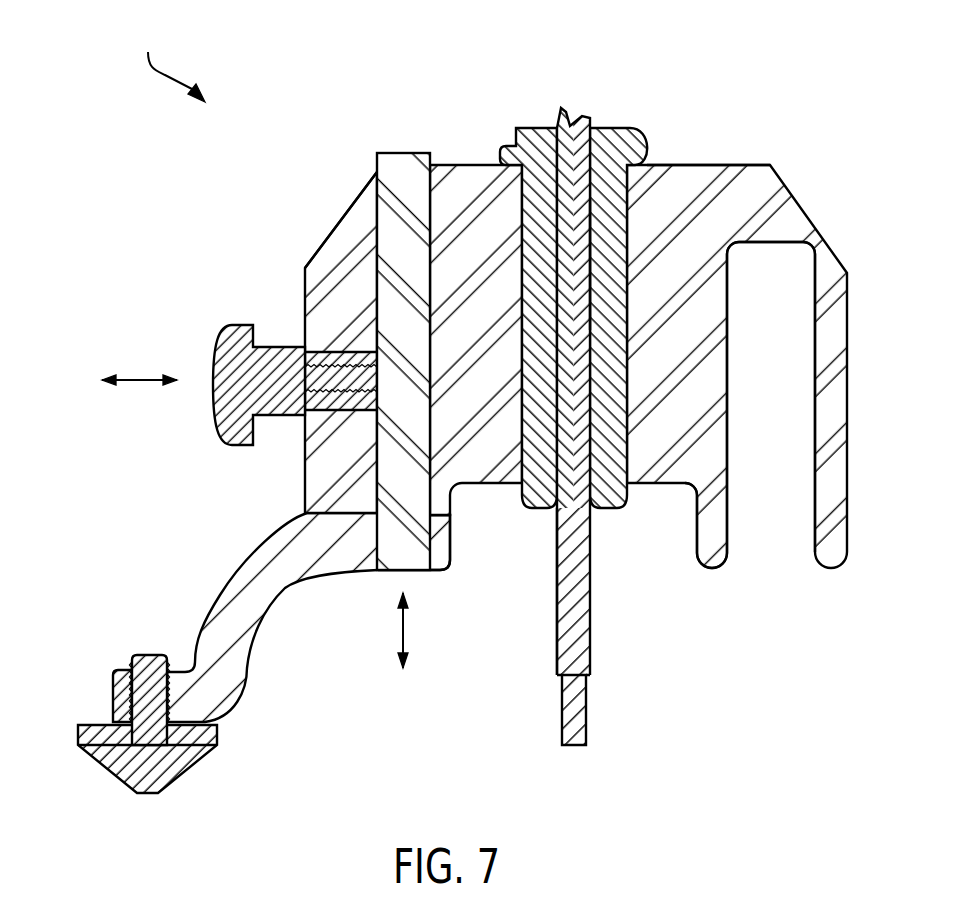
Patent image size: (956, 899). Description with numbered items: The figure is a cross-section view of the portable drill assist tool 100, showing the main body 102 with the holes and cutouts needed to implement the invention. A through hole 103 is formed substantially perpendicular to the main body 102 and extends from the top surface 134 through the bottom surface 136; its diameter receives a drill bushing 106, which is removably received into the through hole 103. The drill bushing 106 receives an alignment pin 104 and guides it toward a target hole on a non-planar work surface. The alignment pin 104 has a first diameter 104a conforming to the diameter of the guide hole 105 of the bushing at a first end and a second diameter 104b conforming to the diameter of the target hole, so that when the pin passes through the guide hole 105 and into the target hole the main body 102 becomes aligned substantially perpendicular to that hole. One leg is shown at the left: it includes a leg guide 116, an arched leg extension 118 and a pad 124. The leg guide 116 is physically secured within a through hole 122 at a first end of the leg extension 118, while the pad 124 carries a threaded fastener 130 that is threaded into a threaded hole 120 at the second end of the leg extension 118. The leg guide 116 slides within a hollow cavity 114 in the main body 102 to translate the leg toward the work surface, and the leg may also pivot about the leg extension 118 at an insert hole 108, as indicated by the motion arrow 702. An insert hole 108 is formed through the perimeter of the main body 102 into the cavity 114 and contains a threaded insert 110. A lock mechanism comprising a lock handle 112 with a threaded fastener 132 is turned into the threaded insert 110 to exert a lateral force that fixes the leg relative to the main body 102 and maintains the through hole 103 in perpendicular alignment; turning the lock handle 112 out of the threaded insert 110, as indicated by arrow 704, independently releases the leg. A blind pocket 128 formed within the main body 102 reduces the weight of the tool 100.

The portable drill assist tool 100 is at (170, 62).
The main body 102 is at (755, 178).
The through hole 103 is at (519, 198).
The alignment pin 104 is at (590, 406).
The first diameter 104a is at (563, 598).
The second diameter 104b is at (580, 705).
The guide hole 105 is at (590, 257).
The drill bushing 106 is at (617, 140).
The insert hole 108 is at (347, 413).
The threaded insert 110 is at (327, 353).
The lock handle 112 is at (225, 365).
The hollow cavity 114 is at (378, 252).
The leg guide 116 is at (398, 162).
The leg extension 118 is at (212, 613).
The threaded hole 120 is at (120, 695).
The through hole 122 is at (372, 563).
The pad 124 is at (160, 767).
The blind pocket 128 is at (758, 385).
The threaded fastener 130 is at (140, 656).
The threaded fastener 132 is at (325, 410).
The top surface 134 is at (707, 165).
The bottom surface 136 is at (654, 487).
The leg pivot adjustment 702 is at (402, 630).
The lock mechanism release 704 is at (140, 378).